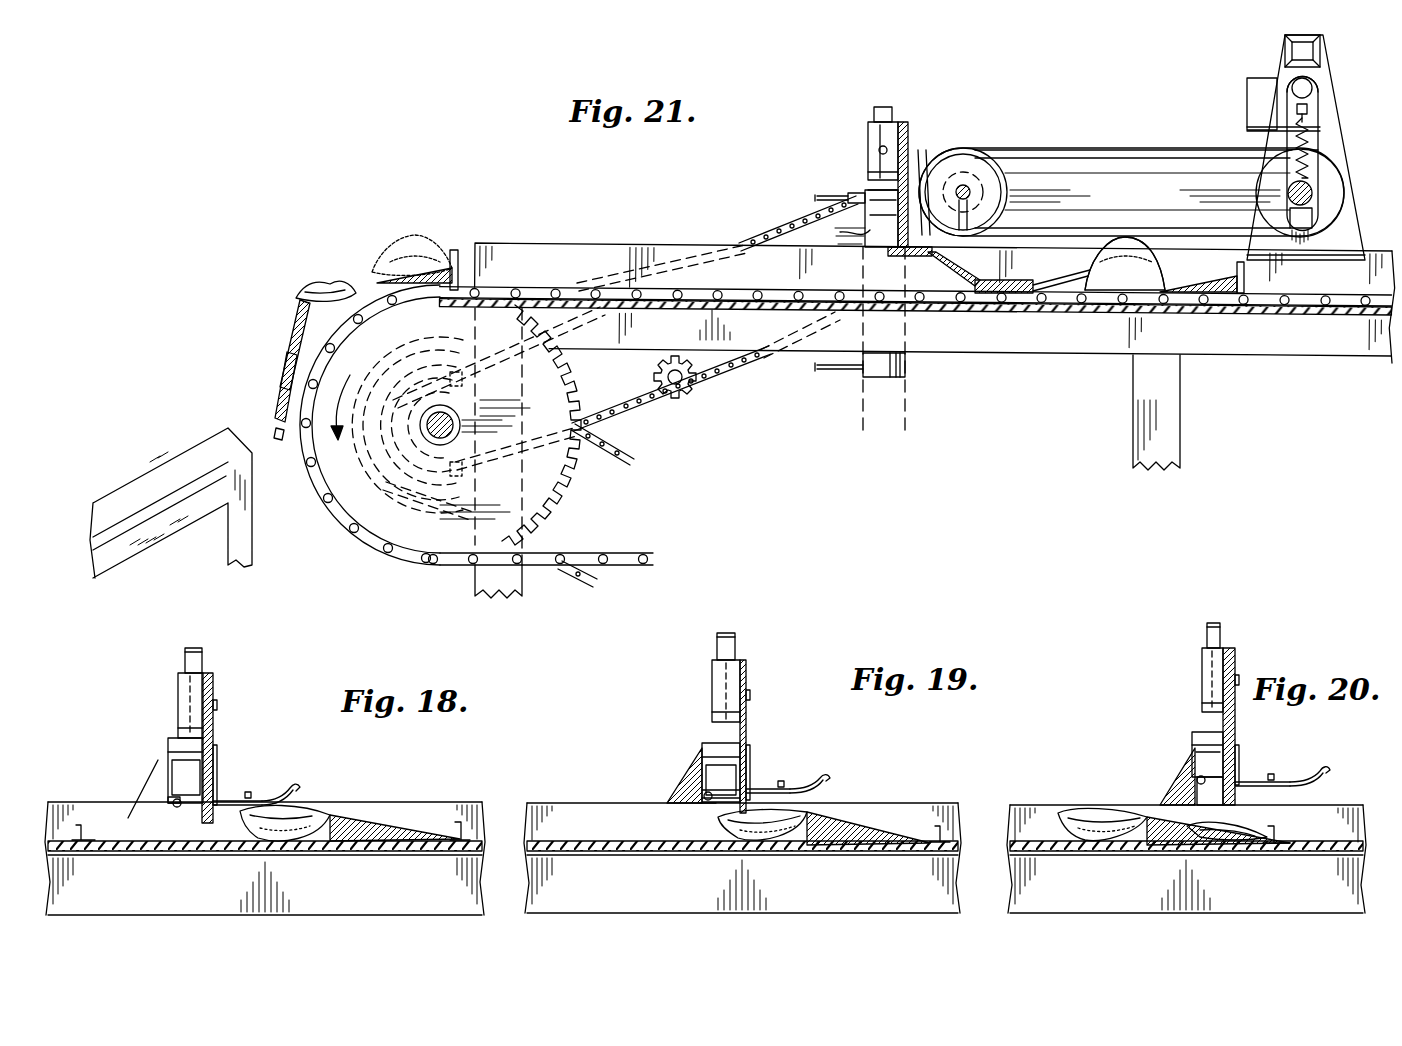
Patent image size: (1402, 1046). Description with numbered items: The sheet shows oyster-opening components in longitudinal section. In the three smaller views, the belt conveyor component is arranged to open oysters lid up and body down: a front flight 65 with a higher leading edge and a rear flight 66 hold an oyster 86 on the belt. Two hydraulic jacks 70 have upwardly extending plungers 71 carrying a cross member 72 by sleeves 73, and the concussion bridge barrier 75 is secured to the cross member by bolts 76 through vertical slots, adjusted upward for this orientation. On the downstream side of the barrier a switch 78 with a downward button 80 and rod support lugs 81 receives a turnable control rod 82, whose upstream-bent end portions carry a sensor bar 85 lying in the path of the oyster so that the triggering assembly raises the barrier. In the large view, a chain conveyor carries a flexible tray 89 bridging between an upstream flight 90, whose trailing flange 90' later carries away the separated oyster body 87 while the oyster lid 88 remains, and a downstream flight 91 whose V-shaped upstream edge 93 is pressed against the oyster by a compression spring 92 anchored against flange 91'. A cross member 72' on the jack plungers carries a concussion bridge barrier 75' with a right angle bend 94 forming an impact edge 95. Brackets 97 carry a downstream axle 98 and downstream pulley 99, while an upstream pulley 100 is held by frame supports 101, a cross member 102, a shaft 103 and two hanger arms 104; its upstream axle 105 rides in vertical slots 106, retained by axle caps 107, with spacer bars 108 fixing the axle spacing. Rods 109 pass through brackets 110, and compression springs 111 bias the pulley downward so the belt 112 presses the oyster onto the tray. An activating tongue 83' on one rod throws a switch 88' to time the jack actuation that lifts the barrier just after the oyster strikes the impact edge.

In FIG. 18, the front flight 65 is at (332, 840).
In FIG. 19, the front flight 65 is at (822, 842).
In FIG. 20, the front flight 65 is at (1154, 843).
In FIG. 18, the rear flight 66 is at (455, 822).
In FIG. 19, the rear flight 66 is at (934, 826).
In FIG. 20, the rear flight 66 is at (1274, 843).
In FIG. 21, the hydraulic jack 70 is at (816, 198).
In FIG. 18, the hydraulic jack 70 is at (184, 750).
In FIG. 19, the hydraulic jack 70 is at (700, 792).
In FIG. 20, the hydraulic jack 70 is at (1206, 788).
In FIG. 18, the plunger 71 is at (203, 662).
In FIG. 19, the plunger 71 is at (737, 650).
In FIG. 20, the plunger 71 is at (1222, 636).
In FIG. 18, the cross member 72 is at (155, 705).
In FIG. 19, the cross member 72 is at (696, 691).
In FIG. 20, the cross member 72 is at (1187, 680).
In FIG. 18, the sleeve 73 is at (184, 690).
In FIG. 19, the sleeve 73 is at (716, 676).
In FIG. 20, the sleeve 73 is at (1206, 662).
In FIG. 18, the concussion bridge barrier 75 is at (232, 771).
In FIG. 19, the concussion bridge barrier 75 is at (764, 772).
In FIG. 20, the concussion bridge barrier 75 is at (1256, 761).
In FIG. 18, the bolt 76 is at (218, 710).
In FIG. 19, the bolt 76 is at (750, 698).
In FIG. 20, the bolt 76 is at (1240, 682).
In FIG. 18, the switch 78 is at (192, 792).
In FIG. 19, the switch 78 is at (708, 752).
In FIG. 20, the switch 78 is at (1200, 746).
In FIG. 18, the switch button 80 is at (174, 796).
In FIG. 18, the rod support lug 81 is at (172, 792).
In FIG. 19, the rod support lug 81 is at (706, 791).
In FIG. 18, the control rod 82 is at (242, 800).
In FIG. 19, the control rod 82 is at (772, 788).
In FIG. 20, the control rod 82 is at (1258, 782).
In FIG. 18, the sensor bar 85 is at (295, 786).
In FIG. 19, the sensor bar 85 is at (822, 777).
In FIG. 20, the sensor bar 85 is at (1316, 772).
In FIG. 21, the oyster 86 is at (1152, 250).
In FIG. 18, the oyster 86 is at (258, 838).
In FIG. 19, the oyster 86 is at (752, 840).
In FIG. 20, the oyster body 87 is at (1092, 818).
In FIG. 21, the oyster lid 88 is at (305, 269).
In FIG. 20, the oyster lid 88 is at (1263, 809).
In FIG. 21, the tray 89 is at (376, 270).
In FIG. 21, the upstream flight 90 is at (804, 268).
In FIG. 21, the flange 90' is at (875, 249).
In FIG. 21, the downstream flight 91 is at (651, 341).
In FIG. 21, the flange 91' is at (618, 350).
In FIG. 21, the compression spring 92 is at (283, 364).
In FIG. 21, the upstream edge 93 is at (298, 302).
In FIG. 21, the right angle bend 94 is at (880, 254).
In FIG. 21, the impact edge 95 is at (912, 257).
In FIG. 21, the bracket 97 is at (916, 160).
In FIG. 21, the downstream axle 98 is at (968, 188).
In FIG. 21, the downstream pulley 99 is at (963, 170).
In FIG. 21, the upstream pulley 100 is at (1346, 182).
In FIG. 21, the frame support 101 is at (1308, 110).
In FIG. 21, the cross member 102 is at (1322, 52).
In FIG. 21, the shaft 103 is at (1296, 80).
In FIG. 21, the hanger arm 104 is at (1312, 145).
In FIG. 21, the upstream axle 105 is at (1314, 194).
In FIG. 21, the vertical slot 106 is at (1342, 242).
In FIG. 21, the axle cap 107 is at (1316, 214).
In FIG. 21, the spacer bar 108 is at (1122, 175).
In FIG. 21, the rod 109 is at (1312, 123).
In FIG. 21, the bracket 110 is at (1264, 124).
In FIG. 21, the compression spring 111 is at (1320, 162).
In FIG. 21, the belt 112 is at (1056, 148).
In FIG. 21, the cross member 72' is at (908, 170).
In FIG. 21, the concussion bridge barrier 75' is at (834, 233).
In FIG. 21, the activating tongue 83' is at (1334, 83).
In FIG. 21, the switch 88' is at (1260, 91).